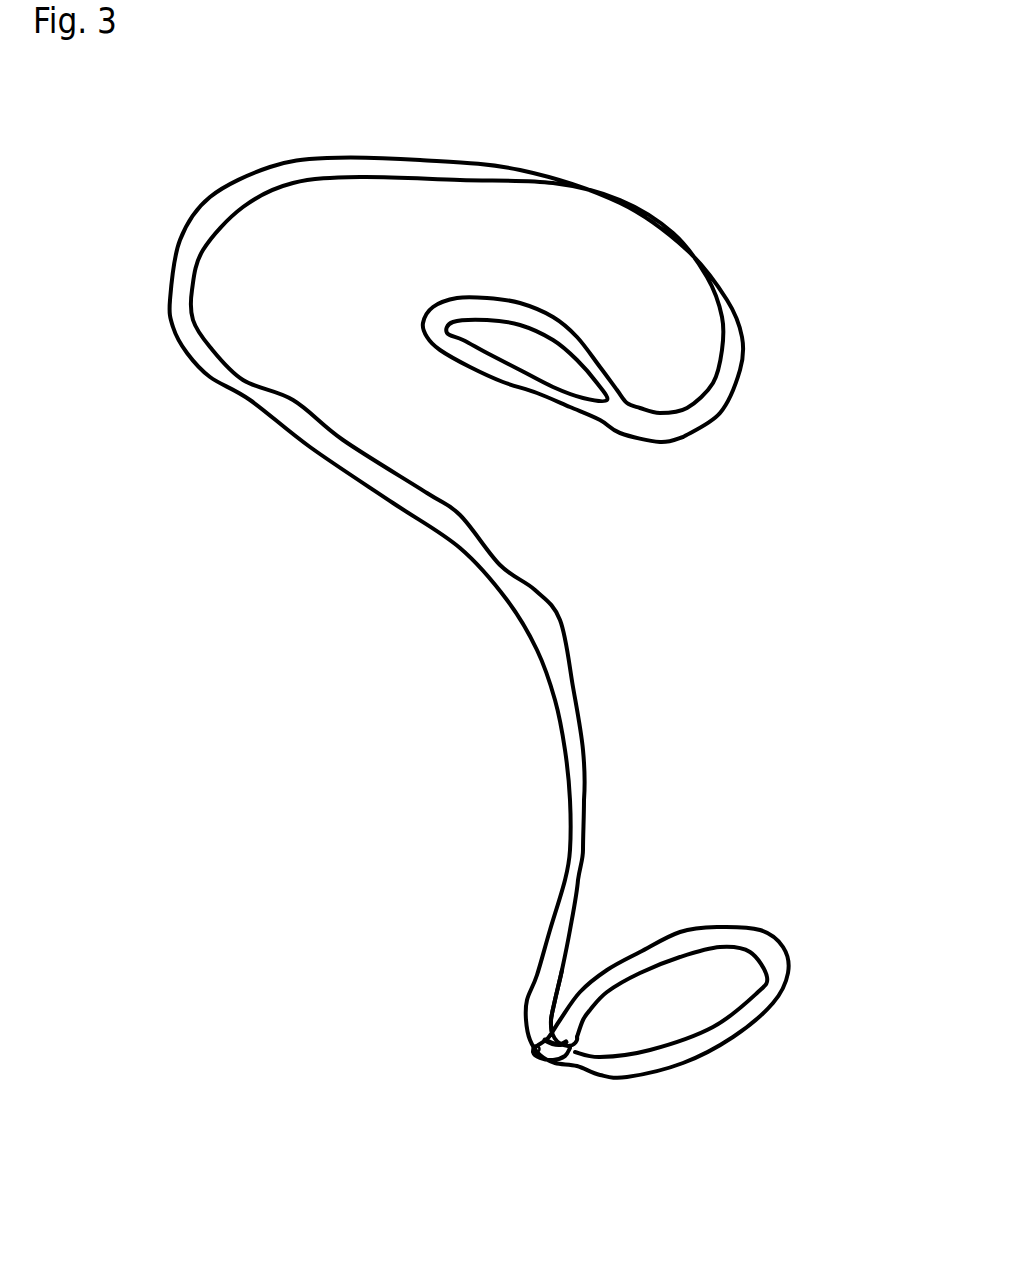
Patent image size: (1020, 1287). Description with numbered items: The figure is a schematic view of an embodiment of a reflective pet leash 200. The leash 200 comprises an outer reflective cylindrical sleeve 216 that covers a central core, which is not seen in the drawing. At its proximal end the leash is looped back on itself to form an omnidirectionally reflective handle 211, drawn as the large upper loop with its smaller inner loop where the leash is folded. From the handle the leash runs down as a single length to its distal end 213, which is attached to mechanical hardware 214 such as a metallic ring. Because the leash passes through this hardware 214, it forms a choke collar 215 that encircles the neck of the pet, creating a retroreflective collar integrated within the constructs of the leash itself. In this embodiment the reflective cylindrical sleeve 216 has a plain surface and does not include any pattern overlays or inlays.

The reflective pet leash 200 is at (208, 115).
The omnidirectionally reflective handle 211 is at (425, 316).
The distal end 213 is at (583, 1000).
The mechanical hardware 214 is at (562, 1060).
The choke collar 215 is at (687, 1058).
The reflective cylindrical sleeve 216 is at (740, 291).